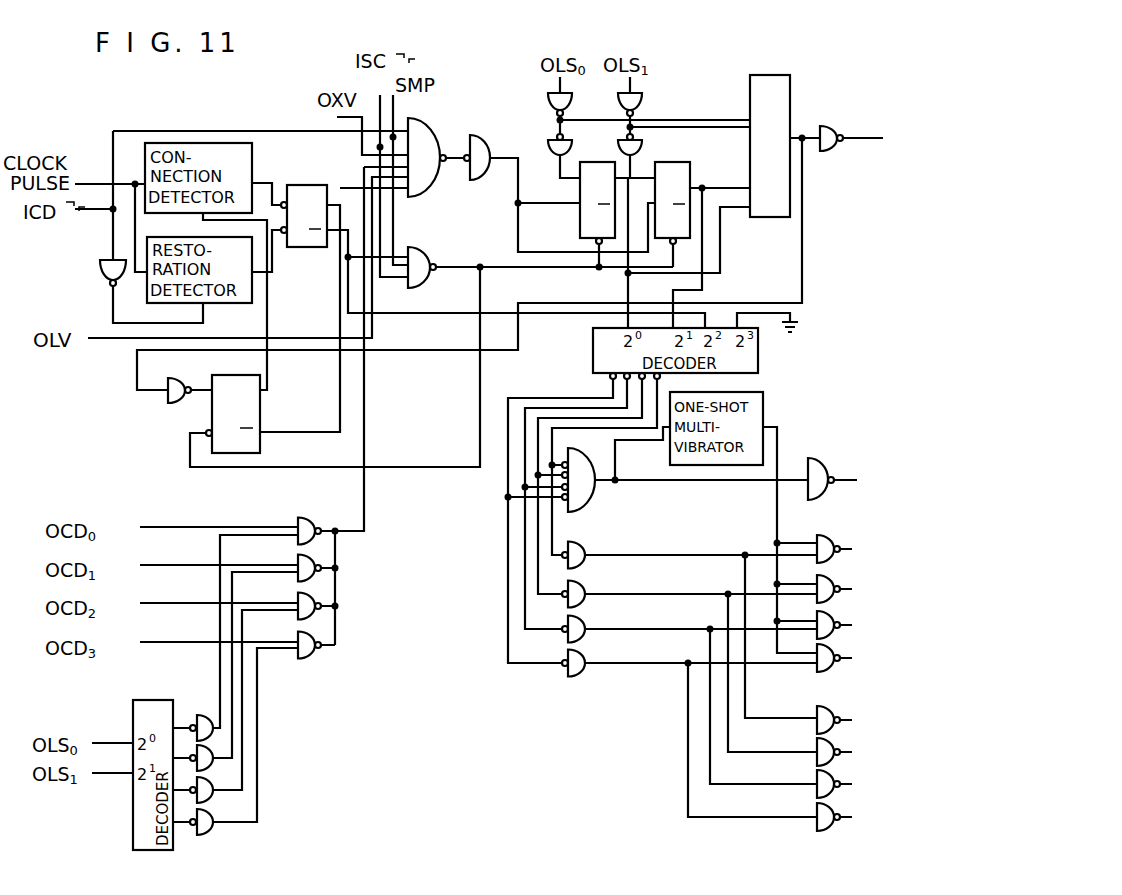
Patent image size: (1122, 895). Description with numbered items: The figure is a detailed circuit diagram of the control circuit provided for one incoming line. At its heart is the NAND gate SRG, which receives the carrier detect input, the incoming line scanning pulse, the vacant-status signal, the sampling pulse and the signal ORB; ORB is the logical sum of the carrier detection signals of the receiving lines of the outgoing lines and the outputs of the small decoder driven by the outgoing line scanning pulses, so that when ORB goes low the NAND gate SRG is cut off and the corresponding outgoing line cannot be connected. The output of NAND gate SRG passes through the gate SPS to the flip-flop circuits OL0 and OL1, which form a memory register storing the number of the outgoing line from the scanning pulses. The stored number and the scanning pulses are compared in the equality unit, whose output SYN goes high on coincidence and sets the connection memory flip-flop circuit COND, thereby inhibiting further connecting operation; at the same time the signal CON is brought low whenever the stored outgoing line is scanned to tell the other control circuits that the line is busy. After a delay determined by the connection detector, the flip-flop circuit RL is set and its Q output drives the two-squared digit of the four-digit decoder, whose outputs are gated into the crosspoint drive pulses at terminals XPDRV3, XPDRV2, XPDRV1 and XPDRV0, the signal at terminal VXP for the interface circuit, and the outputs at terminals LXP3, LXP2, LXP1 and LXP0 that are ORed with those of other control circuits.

The flip-flop circuit RL is at (304, 202).
The NAND gate SRG is at (424, 171).
The SPS gate SPS is at (483, 176).
The flip-flop circuit OL0 is at (595, 191).
The flip-flop circuit OL1 is at (671, 191).
The signal SYN is at (793, 146).
The signal CON is at (862, 133).
The flip-flop circuit COND is at (230, 402).
The signal ORB is at (316, 575).
The terminal VXP is at (869, 479).
The terminal XPDRV3 is at (890, 552).
The terminal XPDRV2 is at (890, 590).
The terminal XPDRV1 is at (890, 625).
The terminal XPDRV0 is at (890, 659).
The terminal LXP3 is at (879, 720).
The terminal LXP2 is at (879, 752).
The terminal LXP1 is at (879, 784).
The terminal LXP0 is at (879, 817).